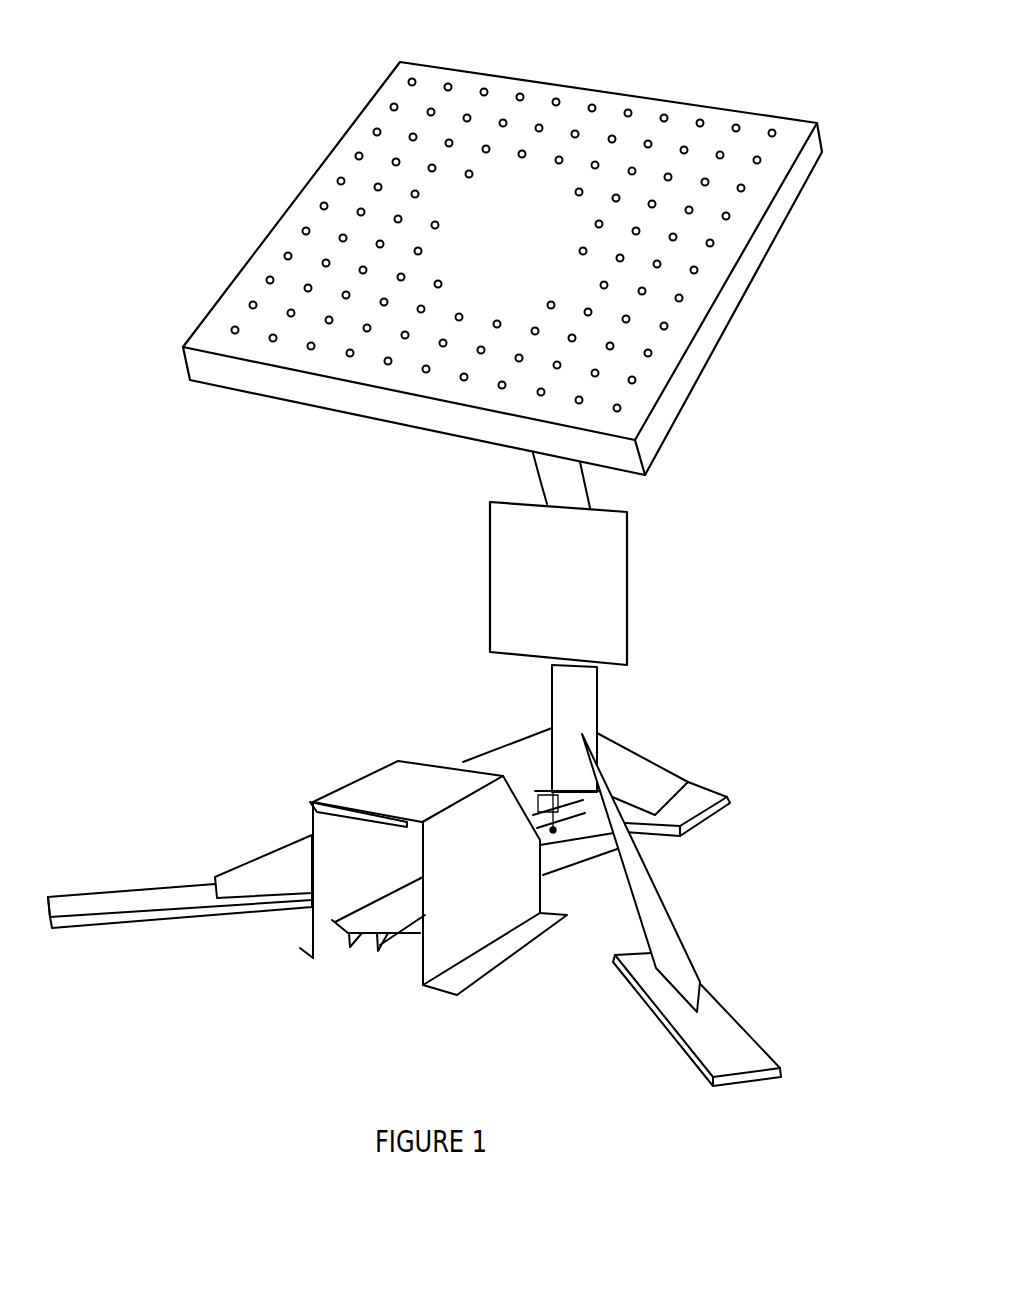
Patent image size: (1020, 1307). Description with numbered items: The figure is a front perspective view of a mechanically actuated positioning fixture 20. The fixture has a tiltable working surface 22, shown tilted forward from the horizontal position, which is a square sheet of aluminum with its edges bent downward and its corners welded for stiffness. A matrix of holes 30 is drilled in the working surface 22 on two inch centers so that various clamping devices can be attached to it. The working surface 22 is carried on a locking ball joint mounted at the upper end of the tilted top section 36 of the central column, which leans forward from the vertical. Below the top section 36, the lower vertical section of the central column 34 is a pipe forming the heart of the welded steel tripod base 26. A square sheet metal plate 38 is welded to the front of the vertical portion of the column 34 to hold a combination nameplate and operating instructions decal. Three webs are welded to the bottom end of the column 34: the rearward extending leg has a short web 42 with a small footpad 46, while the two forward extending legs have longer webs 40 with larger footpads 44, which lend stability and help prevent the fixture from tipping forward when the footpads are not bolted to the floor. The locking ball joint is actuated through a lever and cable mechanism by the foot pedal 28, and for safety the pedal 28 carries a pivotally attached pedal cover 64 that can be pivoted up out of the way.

The positioning fixture 20 is at (590, 60).
The tiltable working surface 22 is at (738, 247).
The holes 30 is at (308, 221).
The tilted top section 36 is at (592, 488).
The sheet metal plate 38 is at (630, 583).
The tripod base 26 is at (763, 842).
The central column 34 is at (597, 698).
The short web 42 is at (650, 763).
The small footpad 46 is at (698, 822).
The webs 40 is at (296, 840).
The footpads 44 is at (155, 890).
The pedal cover 64 is at (385, 760).
The foot pedal 28 is at (367, 933).